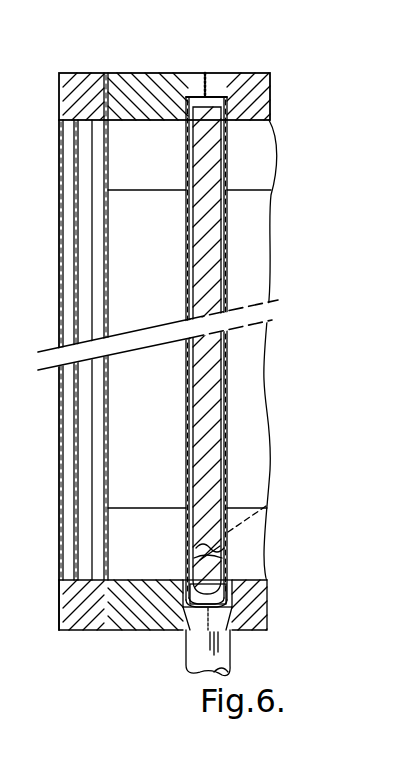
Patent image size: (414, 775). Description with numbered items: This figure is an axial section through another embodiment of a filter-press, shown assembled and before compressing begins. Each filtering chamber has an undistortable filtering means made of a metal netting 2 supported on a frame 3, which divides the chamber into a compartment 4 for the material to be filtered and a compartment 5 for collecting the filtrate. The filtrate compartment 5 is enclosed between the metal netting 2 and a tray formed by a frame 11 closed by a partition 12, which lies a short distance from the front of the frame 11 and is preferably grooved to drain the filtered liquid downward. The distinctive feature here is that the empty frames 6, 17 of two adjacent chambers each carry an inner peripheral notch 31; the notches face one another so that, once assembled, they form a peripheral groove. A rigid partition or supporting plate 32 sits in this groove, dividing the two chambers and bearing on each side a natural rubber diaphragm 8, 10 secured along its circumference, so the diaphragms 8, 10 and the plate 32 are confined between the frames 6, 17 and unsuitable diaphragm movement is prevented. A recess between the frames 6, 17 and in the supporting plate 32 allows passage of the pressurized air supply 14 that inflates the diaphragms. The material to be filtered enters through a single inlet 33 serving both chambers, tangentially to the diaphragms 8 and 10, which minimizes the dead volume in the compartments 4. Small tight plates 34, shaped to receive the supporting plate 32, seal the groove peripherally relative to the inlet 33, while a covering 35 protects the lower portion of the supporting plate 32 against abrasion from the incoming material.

The metal netting 2 is at (119, 138).
The frame 3 is at (106, 100).
The compartment for material to be filtered 4 is at (160, 250).
The compartment for collecting the filtrate 5 is at (99, 216).
The empty frame 6 is at (166, 92).
The resilient diaphragm 8 is at (186, 298).
The second diaphragm 10 is at (228, 294).
The frame 11 is at (80, 94).
The partition 12 is at (76, 178).
The pressurized-fluid supply line 14 is at (266, 506).
The empty frame 17 is at (270, 74).
The inner peripheral notch 31 is at (208, 88).
The supporting plate 32 is at (218, 103).
The inlet 33 is at (214, 656).
The tight plates 34 is at (262, 574).
The covering 35 is at (229, 576).